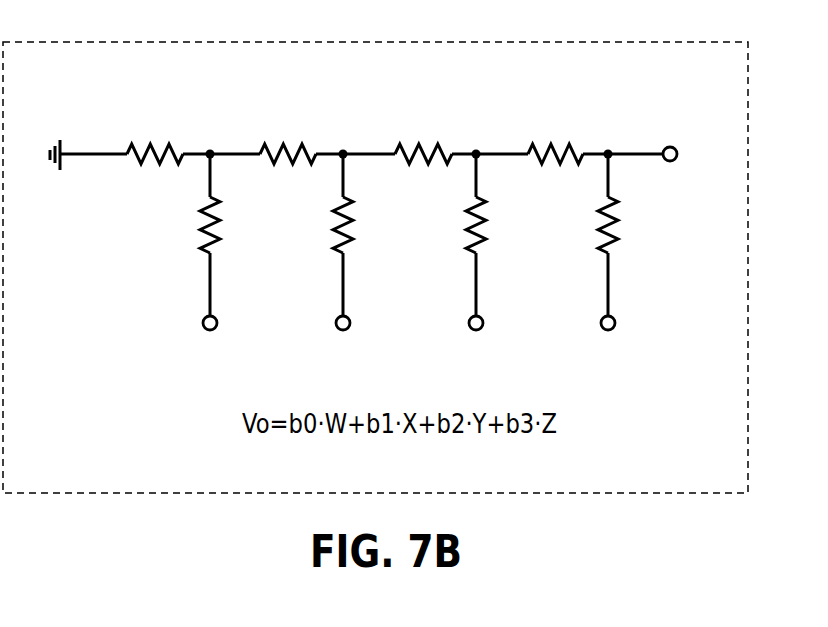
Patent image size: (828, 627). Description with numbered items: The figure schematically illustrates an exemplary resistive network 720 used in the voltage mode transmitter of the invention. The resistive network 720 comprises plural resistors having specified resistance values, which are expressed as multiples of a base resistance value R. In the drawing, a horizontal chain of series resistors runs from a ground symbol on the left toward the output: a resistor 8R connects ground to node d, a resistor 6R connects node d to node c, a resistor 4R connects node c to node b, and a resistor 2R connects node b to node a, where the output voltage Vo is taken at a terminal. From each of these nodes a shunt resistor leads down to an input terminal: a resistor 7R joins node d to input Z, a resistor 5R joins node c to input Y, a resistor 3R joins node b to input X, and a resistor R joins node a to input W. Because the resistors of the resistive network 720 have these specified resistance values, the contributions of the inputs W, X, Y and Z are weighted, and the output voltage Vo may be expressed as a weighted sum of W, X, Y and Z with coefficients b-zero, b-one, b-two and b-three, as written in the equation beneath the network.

The resistive network 720 is at (376, 230).
The resistor 8R is at (155, 171).
The resistor 6R is at (288, 171).
The resistor 4R is at (423, 172).
The resistor 2R is at (555, 172).
The resistor 7R is at (187, 225).
The resistor 5R is at (324, 225).
The resistor 3R is at (458, 225).
The resistance value R is at (593, 225).
The node a is at (607, 140).
The node b is at (475, 140).
The node c is at (342, 140).
The node d is at (210, 140).
The input terminal W is at (624, 323).
The input terminal X is at (489, 323).
The input terminal Y is at (356, 323).
The input terminal Z is at (224, 323).
The output voltage Vo is at (695, 154).